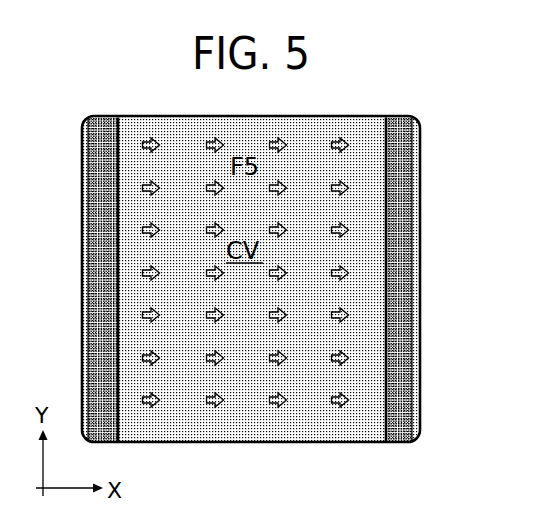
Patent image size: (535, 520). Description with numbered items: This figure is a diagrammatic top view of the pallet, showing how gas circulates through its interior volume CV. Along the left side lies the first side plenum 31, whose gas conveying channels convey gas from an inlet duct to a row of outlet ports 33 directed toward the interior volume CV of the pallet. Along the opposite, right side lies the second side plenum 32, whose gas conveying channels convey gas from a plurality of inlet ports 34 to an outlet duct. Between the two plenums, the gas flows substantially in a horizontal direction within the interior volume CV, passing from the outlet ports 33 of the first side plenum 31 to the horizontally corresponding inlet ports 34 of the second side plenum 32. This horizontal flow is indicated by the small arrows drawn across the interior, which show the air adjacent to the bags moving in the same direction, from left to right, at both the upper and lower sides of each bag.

The first side plenum 31 is at (91, 228).
The second side plenum 32 is at (407, 174).
The outlet ports 33 is at (112, 133).
The inlet ports 34 is at (381, 256).